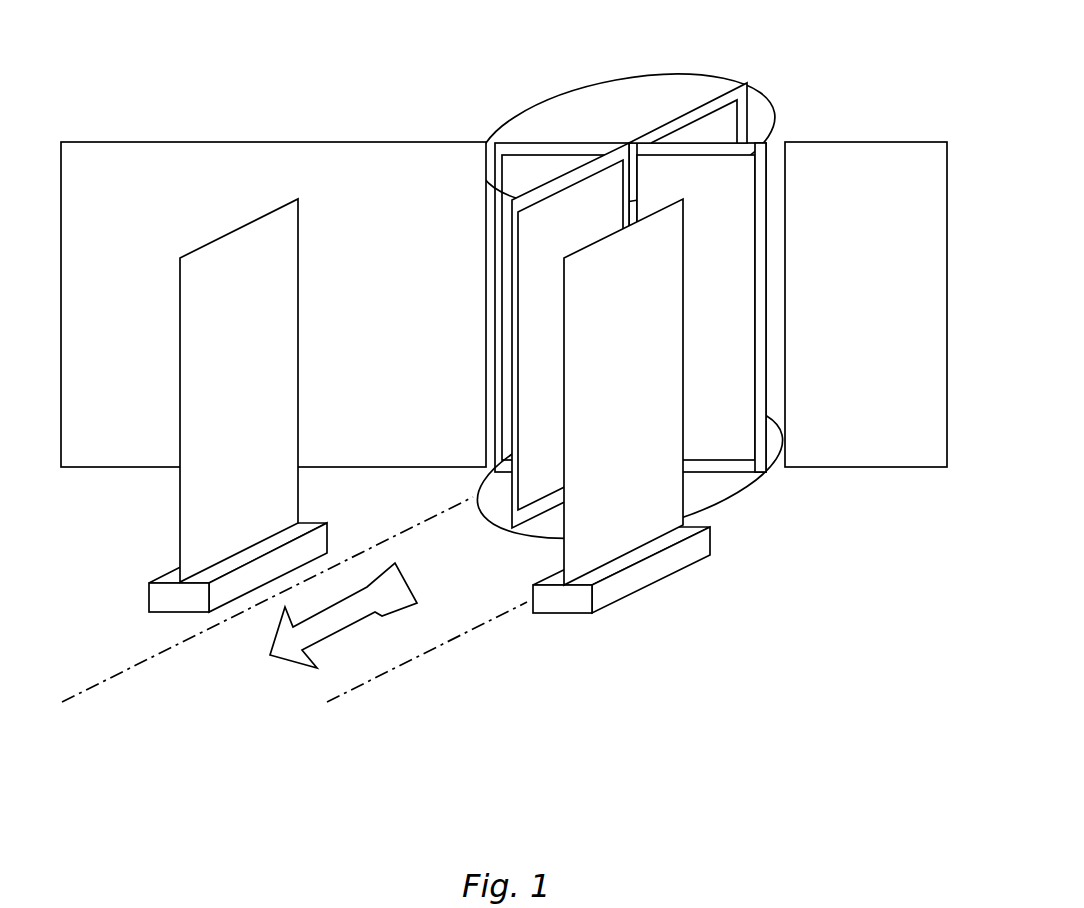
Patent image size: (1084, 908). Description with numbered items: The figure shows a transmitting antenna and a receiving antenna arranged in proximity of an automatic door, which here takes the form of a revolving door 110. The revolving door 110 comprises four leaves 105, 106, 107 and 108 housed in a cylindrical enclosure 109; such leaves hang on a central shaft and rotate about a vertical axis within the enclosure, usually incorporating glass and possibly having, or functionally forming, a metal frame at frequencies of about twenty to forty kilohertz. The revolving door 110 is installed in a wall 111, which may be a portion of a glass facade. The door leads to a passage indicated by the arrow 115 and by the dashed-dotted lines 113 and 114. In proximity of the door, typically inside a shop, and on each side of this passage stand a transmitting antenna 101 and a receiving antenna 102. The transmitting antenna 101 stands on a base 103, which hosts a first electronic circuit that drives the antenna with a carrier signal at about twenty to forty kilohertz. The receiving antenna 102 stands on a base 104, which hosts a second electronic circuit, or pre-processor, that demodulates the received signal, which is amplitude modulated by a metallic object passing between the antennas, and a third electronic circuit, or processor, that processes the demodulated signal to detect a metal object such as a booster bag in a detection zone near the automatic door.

The transmitting antenna 101 is at (259, 423).
The receiving antenna 102 is at (653, 420).
The base 103 is at (168, 603).
The base 104 is at (563, 598).
The leaf 105 is at (584, 243).
The leaf 106 is at (731, 192).
The leaf 107 is at (730, 120).
The leaf 108 is at (533, 168).
The cylindrical enclosure 109 is at (680, 72).
The revolving door 110 is at (744, 48).
The wall 111 is at (141, 189).
The dashed-dotted line 113 is at (90, 688).
The dashed-dotted line 114 is at (355, 690).
The arrow 115 is at (312, 632).